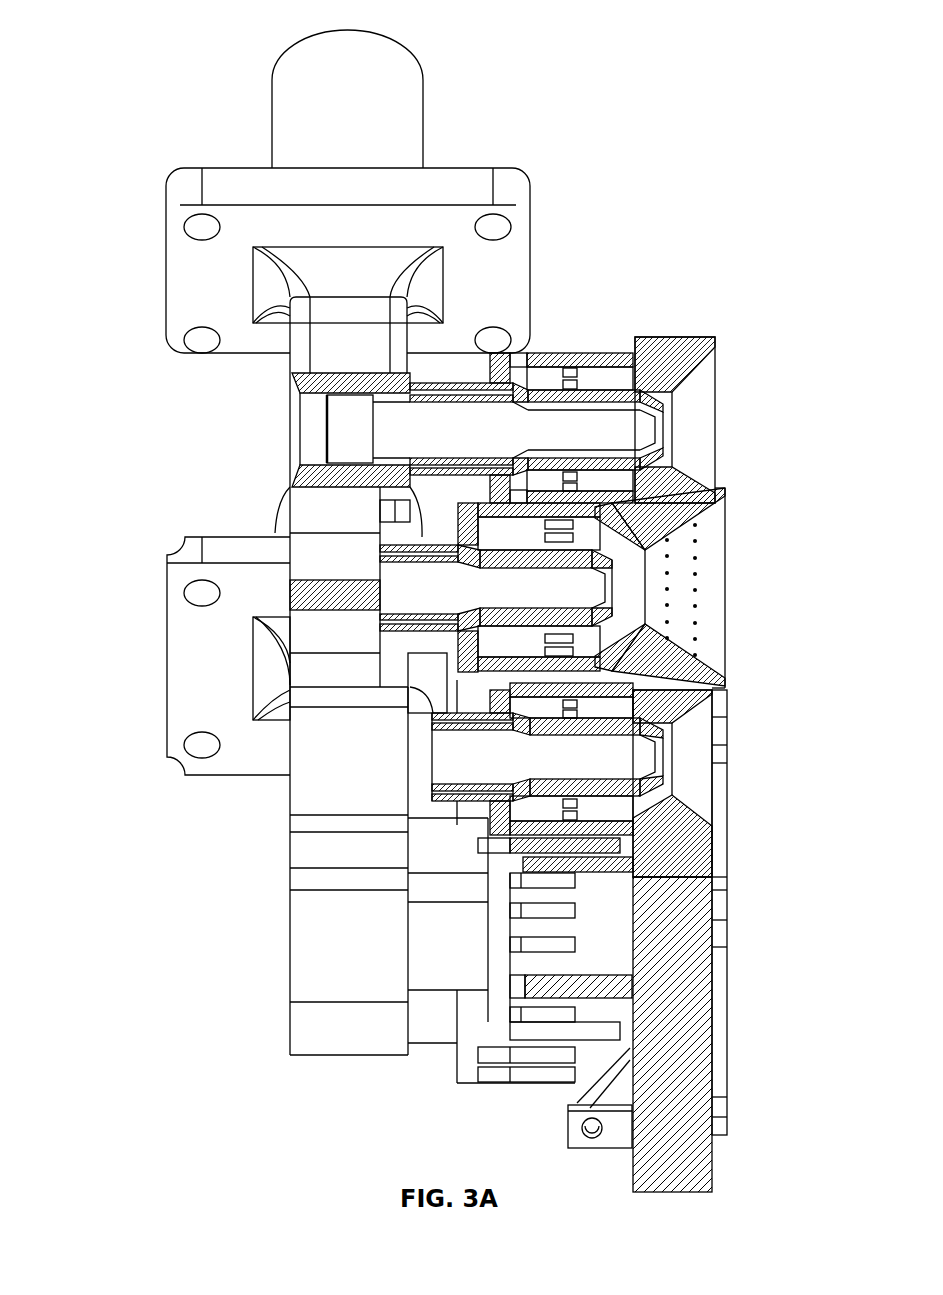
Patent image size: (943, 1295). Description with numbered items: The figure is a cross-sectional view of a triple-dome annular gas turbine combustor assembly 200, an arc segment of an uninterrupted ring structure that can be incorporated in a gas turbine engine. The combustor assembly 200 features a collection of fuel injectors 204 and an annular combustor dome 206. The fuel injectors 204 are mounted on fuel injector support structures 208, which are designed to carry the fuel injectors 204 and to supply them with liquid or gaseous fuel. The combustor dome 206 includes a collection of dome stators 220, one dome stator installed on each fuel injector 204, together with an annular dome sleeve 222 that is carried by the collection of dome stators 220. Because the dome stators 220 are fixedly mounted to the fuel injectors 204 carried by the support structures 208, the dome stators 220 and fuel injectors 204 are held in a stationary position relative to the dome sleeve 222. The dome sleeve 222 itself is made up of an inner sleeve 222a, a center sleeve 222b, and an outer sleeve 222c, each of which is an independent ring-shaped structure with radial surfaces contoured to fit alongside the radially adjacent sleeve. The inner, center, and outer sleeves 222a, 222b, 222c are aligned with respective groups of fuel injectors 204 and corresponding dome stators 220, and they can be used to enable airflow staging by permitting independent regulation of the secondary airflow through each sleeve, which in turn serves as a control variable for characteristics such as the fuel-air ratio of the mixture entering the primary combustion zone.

The gas turbine combustor assembly 200 is at (124, 52).
The fuel injector 204 is at (443, 378).
The annular combustor dome 206 is at (681, 310).
The fuel injector support structure 208 is at (253, 128).
The dome stator 220 is at (458, 1080).
The annular dome sleeve 222 is at (830, 336).
The inner sleeve 222a is at (712, 765).
The center sleeve 222b is at (727, 590).
The outer sleeve 222c is at (715, 350).